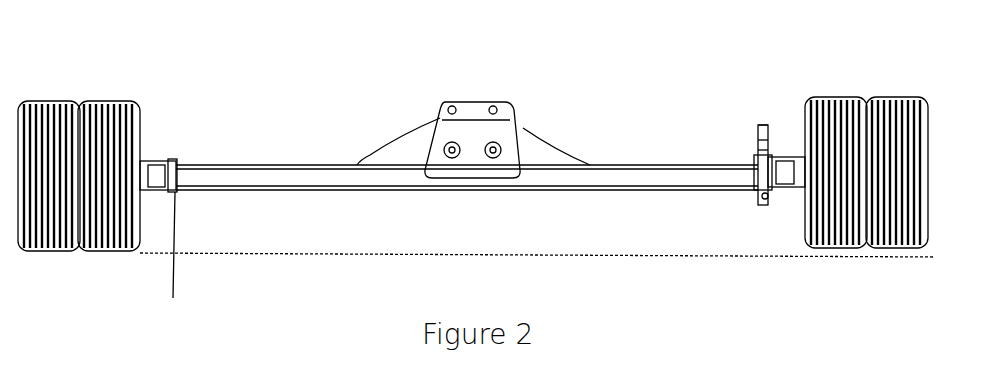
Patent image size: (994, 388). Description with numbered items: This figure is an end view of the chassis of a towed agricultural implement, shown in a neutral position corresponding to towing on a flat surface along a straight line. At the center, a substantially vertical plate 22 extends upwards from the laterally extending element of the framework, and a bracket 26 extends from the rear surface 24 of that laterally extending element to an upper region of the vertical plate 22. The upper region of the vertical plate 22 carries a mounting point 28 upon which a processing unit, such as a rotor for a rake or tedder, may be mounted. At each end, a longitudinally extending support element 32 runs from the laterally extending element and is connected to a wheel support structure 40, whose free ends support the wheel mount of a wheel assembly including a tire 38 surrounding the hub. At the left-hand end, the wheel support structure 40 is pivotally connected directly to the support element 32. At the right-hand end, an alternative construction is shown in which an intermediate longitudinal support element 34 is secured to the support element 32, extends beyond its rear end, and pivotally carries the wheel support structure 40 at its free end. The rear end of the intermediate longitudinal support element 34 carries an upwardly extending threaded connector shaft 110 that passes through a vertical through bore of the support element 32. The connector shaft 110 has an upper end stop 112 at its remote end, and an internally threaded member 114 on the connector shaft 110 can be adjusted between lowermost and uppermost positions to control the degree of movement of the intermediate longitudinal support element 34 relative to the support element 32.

The tire 38 is at (51, 101).
The wheel support structure 40 is at (157, 152).
The rear surface 24 is at (318, 176).
The longitudinally extending support element 32 is at (760, 193).
The intermediate longitudinal support element 34 is at (778, 190).
The upper end stop 112 is at (760, 127).
The threaded connector shaft 110 is at (757, 140).
The internally threaded member 114 is at (757, 150).
The bracket 26 is at (510, 120).
The mounting point 28 is at (470, 101).
The vertical plate 22 is at (537, 150).